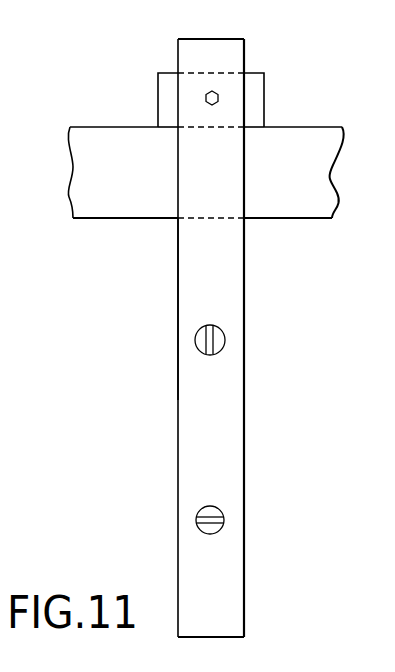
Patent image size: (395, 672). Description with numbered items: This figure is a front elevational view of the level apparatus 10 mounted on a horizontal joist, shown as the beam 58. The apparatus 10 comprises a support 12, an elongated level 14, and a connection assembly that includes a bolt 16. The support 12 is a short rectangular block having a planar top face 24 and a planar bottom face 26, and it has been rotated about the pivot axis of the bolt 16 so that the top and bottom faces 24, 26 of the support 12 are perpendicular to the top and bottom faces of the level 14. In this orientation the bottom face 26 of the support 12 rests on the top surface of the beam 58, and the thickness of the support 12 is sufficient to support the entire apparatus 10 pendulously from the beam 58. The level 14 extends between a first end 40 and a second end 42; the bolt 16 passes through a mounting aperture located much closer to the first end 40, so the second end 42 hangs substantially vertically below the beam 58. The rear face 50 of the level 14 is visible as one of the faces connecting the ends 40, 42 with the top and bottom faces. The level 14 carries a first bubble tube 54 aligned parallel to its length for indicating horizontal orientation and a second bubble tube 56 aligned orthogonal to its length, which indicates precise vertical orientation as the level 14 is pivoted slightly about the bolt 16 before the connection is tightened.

The level apparatus 10 is at (283, 300).
The support 12 is at (148, 102).
The level 14 is at (244, 379).
The bolt 16 is at (215, 90).
The planar top face 24 is at (167, 73).
The planar bottom face 26 is at (168, 128).
The first end 40 is at (220, 637).
The second end 42 is at (202, 39).
The rear face 50 is at (187, 261).
The first bubble tube 54 is at (198, 345).
The second bubble tube 56 is at (207, 517).
The beam 58 is at (308, 126).